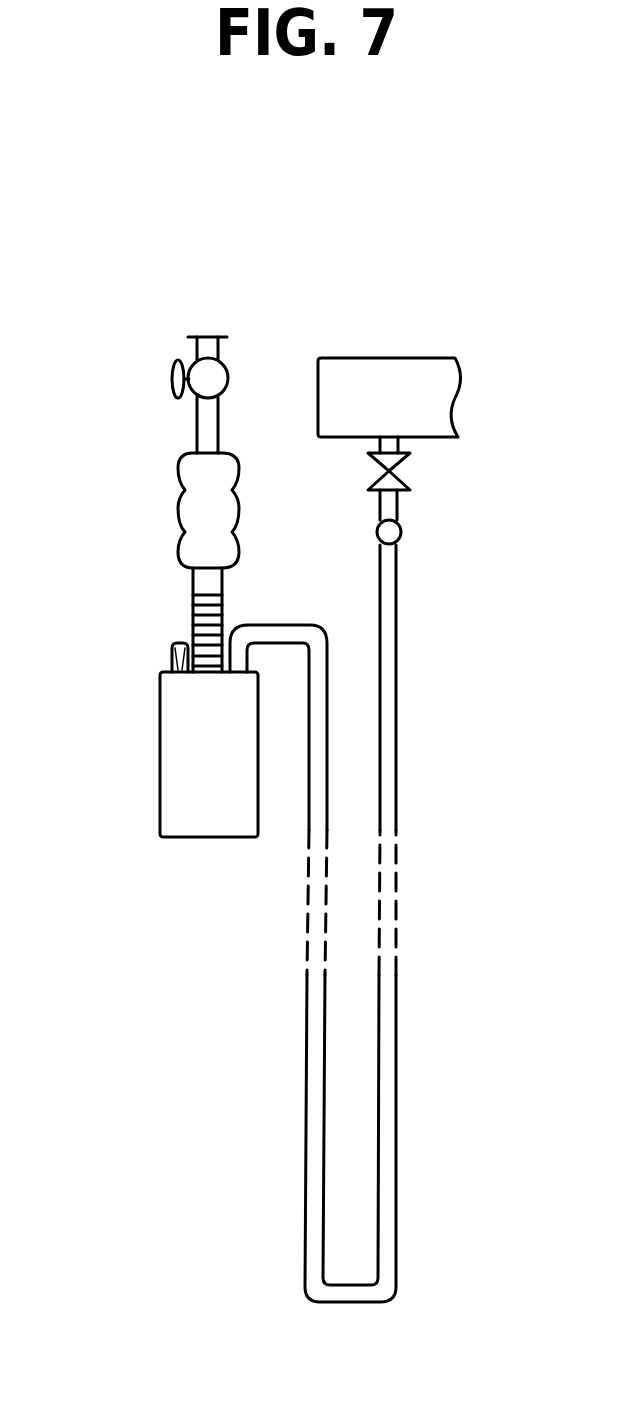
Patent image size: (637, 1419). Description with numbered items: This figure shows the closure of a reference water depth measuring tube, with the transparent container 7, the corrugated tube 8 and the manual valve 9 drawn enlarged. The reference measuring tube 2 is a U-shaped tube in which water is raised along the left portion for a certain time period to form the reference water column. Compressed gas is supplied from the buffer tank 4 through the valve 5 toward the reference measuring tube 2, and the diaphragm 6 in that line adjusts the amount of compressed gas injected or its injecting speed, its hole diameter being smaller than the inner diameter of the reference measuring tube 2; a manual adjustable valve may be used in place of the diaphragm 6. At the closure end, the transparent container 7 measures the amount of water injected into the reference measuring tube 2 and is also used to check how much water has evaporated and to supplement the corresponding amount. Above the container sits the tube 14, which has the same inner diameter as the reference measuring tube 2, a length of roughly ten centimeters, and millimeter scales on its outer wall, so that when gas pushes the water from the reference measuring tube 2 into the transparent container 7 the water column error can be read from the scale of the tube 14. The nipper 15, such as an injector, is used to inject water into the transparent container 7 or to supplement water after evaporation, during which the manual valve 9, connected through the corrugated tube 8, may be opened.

The reference measuring tube 2 is at (398, 710).
The buffer tank 4 is at (392, 357).
The valve 5 is at (405, 480).
The diaphragm 6 is at (402, 530).
The transparent container 7 is at (160, 790).
The corrugated tube 8 is at (181, 510).
The manual valve 9 is at (224, 372).
The tube 14 is at (193, 622).
The nipper 15 is at (172, 650).